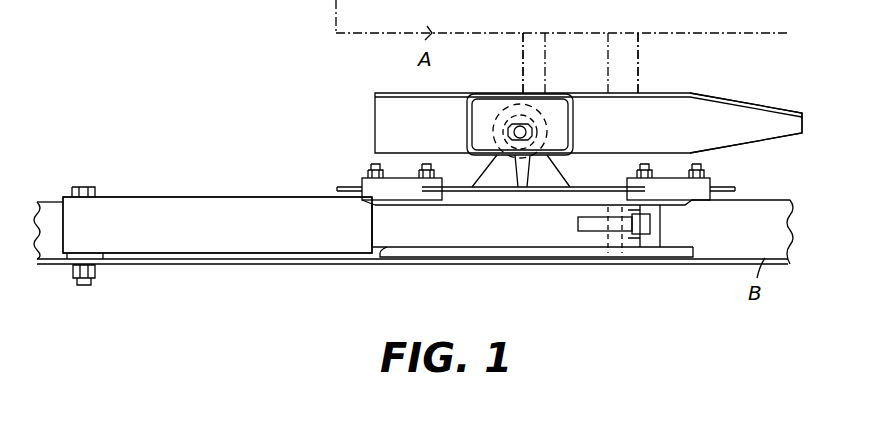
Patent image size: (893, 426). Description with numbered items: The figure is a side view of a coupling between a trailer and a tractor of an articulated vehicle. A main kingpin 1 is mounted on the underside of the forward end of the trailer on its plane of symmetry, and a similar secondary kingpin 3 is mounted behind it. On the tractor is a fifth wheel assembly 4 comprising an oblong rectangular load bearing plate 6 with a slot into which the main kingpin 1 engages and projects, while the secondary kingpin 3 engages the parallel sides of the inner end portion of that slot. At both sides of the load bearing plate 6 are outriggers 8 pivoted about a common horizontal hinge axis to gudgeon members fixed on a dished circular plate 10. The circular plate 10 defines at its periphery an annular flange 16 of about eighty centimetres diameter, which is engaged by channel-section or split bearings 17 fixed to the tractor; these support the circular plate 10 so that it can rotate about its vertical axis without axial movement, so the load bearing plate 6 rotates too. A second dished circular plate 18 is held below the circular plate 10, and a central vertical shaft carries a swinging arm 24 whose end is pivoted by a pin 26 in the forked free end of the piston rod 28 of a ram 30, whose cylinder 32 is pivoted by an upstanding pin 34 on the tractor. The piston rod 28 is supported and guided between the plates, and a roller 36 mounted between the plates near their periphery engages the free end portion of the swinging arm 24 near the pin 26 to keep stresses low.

The main kingpin 1 is at (528, 67).
The secondary kingpin 3 is at (630, 62).
The fifth wheel assembly 4 is at (392, 92).
The load bearing plate 6 is at (737, 101).
The outriggers 8 is at (575, 122).
The dished circular plate 10 is at (495, 196).
The annular flange 16 is at (737, 189).
The split bearings 17 is at (362, 184).
The second dished circular plate 18 is at (512, 253).
The swinging arm 24 is at (590, 226).
The pin 26 is at (615, 240).
The piston rod 28 is at (430, 250).
The ram 30 is at (270, 189).
The cylinder 32 is at (172, 208).
The upstanding pin 34 is at (84, 186).
The roller 36 is at (660, 222).